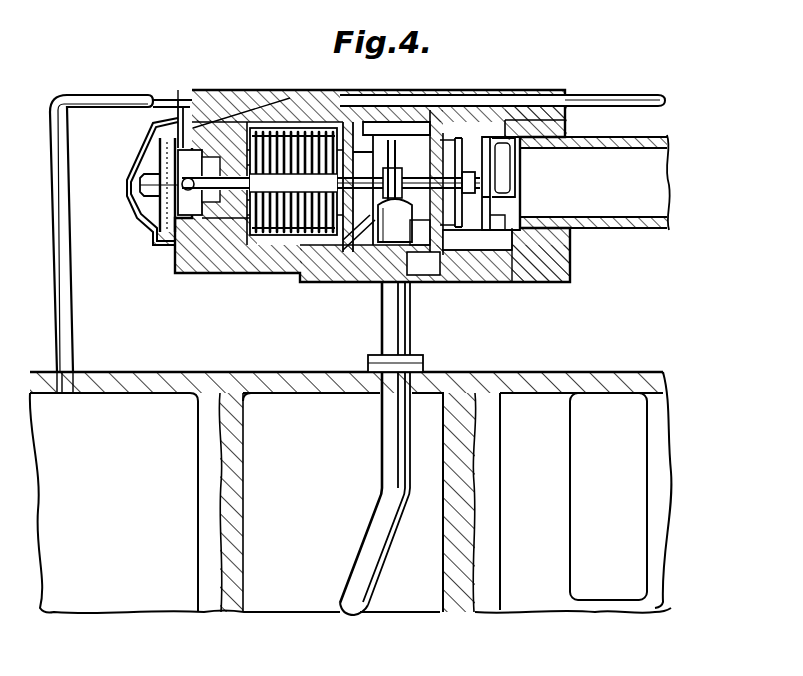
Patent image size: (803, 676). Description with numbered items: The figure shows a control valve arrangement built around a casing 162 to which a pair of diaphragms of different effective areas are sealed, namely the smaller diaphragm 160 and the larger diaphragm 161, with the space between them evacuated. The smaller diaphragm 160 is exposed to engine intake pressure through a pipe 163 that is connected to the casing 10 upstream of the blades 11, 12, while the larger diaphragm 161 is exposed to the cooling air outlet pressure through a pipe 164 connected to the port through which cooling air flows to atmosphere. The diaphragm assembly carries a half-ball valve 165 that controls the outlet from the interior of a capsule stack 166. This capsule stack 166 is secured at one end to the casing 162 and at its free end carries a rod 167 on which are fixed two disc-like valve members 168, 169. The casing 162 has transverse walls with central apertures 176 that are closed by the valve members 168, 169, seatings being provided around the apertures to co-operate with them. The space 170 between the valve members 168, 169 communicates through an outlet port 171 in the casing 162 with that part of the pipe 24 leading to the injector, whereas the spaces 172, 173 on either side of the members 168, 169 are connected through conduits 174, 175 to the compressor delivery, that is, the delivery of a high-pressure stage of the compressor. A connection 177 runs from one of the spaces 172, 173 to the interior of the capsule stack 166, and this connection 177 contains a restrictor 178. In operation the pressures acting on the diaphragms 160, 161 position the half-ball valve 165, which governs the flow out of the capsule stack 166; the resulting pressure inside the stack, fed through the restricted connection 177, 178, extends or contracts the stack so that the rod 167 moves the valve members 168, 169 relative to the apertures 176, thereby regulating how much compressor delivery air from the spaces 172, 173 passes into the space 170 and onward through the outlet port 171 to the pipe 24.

The casing 10 is at (93, 384).
The blades 11 is at (277, 413).
The blades 12 is at (597, 410).
The pipe 24 is at (413, 333).
The smaller diaphragm 160 is at (185, 272).
The larger diaphragm 161 is at (160, 216).
The casing 162 is at (203, 98).
The pipe 163 is at (74, 297).
The pipe 164 is at (607, 97).
The half-ball valve 165 is at (157, 153).
The capsule stack 166 is at (270, 125).
The rod 167 is at (362, 112).
The disc-like valve member 168 is at (453, 140).
The disc-like valve member 169 is at (485, 262).
The space 170 is at (405, 235).
The outlet port 171 is at (385, 200).
The space 172 is at (345, 238).
The space 173 is at (515, 280).
The conduit 174 is at (397, 122).
The conduit 175 is at (627, 205).
The central apertures 176 is at (478, 138).
The connection 177 is at (262, 272).
The restrictor 178 is at (277, 255).